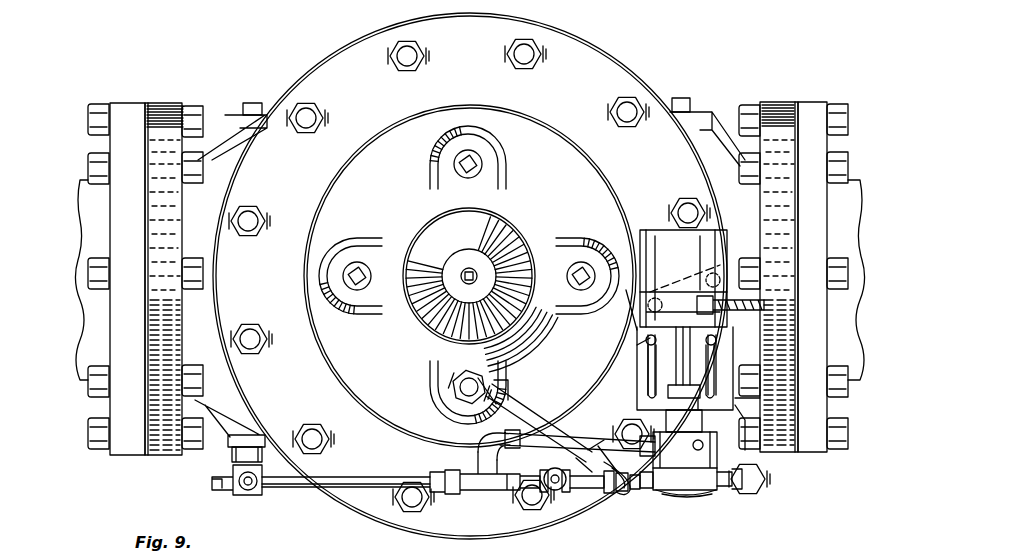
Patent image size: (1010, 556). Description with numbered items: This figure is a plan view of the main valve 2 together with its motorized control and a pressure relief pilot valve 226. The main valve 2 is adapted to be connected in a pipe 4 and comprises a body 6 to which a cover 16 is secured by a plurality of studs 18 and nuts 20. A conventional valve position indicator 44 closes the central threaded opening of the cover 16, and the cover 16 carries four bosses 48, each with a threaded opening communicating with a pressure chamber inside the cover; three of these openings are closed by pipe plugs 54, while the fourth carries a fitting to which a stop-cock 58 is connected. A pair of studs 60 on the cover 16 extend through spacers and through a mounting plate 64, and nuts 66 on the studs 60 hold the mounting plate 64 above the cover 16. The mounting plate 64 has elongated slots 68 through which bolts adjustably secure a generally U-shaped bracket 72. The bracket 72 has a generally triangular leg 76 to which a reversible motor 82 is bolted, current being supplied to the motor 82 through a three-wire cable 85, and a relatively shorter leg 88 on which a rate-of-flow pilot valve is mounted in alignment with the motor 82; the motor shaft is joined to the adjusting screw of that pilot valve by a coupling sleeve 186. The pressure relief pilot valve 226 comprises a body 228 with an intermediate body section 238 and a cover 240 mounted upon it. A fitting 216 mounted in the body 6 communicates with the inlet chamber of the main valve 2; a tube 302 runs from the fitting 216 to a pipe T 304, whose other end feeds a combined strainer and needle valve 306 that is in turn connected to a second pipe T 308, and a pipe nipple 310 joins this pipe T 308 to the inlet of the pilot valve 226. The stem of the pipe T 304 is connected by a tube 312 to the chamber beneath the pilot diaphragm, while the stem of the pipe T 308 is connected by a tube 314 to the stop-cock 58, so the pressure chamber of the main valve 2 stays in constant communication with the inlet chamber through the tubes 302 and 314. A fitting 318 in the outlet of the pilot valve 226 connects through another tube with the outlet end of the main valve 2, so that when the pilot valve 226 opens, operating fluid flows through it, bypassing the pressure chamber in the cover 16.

The main valve 2 is at (299, 65).
The pipe 4 is at (122, 115).
The valve body 6 is at (192, 163).
The cover 16 is at (622, 78).
The studs 18 is at (414, 70).
The nuts 20 is at (408, 56).
The valve position indicator 44 is at (469, 268).
The bosses 48 is at (366, 238).
The pipe plugs 54 is at (469, 178).
The stop-cock 58 is at (454, 376).
The studs 60 is at (654, 296).
The mounting plate 64 is at (640, 352).
The nuts 66 is at (710, 270).
The elongated slots 68 is at (648, 390).
The bracket 72 is at (712, 372).
The triangular leg 76 is at (632, 348).
The reversible motor 82 is at (724, 232).
The 3-wire cable 85 is at (750, 302).
The shorter leg 88 is at (684, 408).
The coupling sleeve 186 is at (676, 352).
The fitting 216 is at (228, 458).
The pressure relief pilot valve 226 is at (706, 496).
The body 228 is at (690, 498).
The intermediate body section 238 is at (678, 461).
The cover 240 is at (704, 440).
The tube 302 is at (296, 492).
The pipe T 304 is at (482, 498).
The combined strainer and needle valve 306 is at (556, 500).
The pipe T 308 is at (622, 498).
The pipe nipple 310 is at (650, 500).
The tube 312 is at (578, 436).
The tube 314 is at (520, 414).
The fitting 318 is at (764, 484).